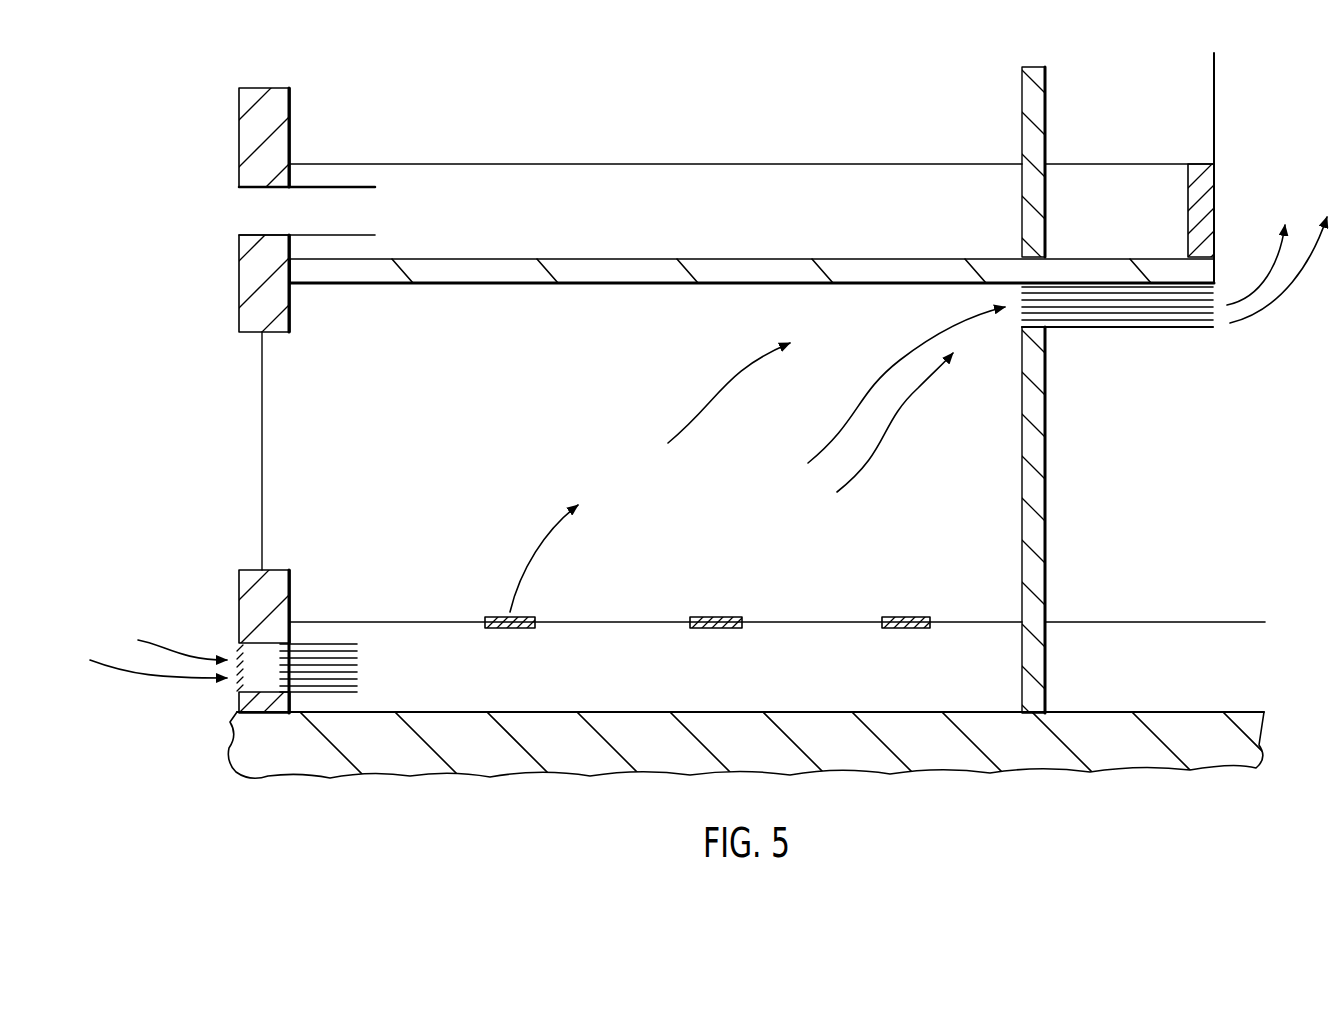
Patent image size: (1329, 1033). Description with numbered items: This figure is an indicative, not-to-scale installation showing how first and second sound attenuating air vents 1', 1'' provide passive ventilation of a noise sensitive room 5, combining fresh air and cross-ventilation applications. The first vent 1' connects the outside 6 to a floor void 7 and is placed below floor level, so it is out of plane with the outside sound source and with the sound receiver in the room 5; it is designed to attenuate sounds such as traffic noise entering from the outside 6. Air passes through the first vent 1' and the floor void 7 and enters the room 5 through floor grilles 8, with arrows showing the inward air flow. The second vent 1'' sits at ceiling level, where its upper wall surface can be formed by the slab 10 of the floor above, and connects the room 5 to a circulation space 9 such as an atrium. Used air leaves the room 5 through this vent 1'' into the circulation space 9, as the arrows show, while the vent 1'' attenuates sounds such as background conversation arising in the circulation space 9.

The first sound attenuating air vent 1' is at (258, 666).
The second sound attenuating air vent 1'' is at (1174, 304).
The noise sensitive room 5 is at (607, 451).
The outside 6 is at (210, 457).
The floor void 7 is at (633, 689).
The floor grilles 8 is at (690, 612).
The circulation space 9 is at (1151, 525).
The slab 10 is at (797, 270).